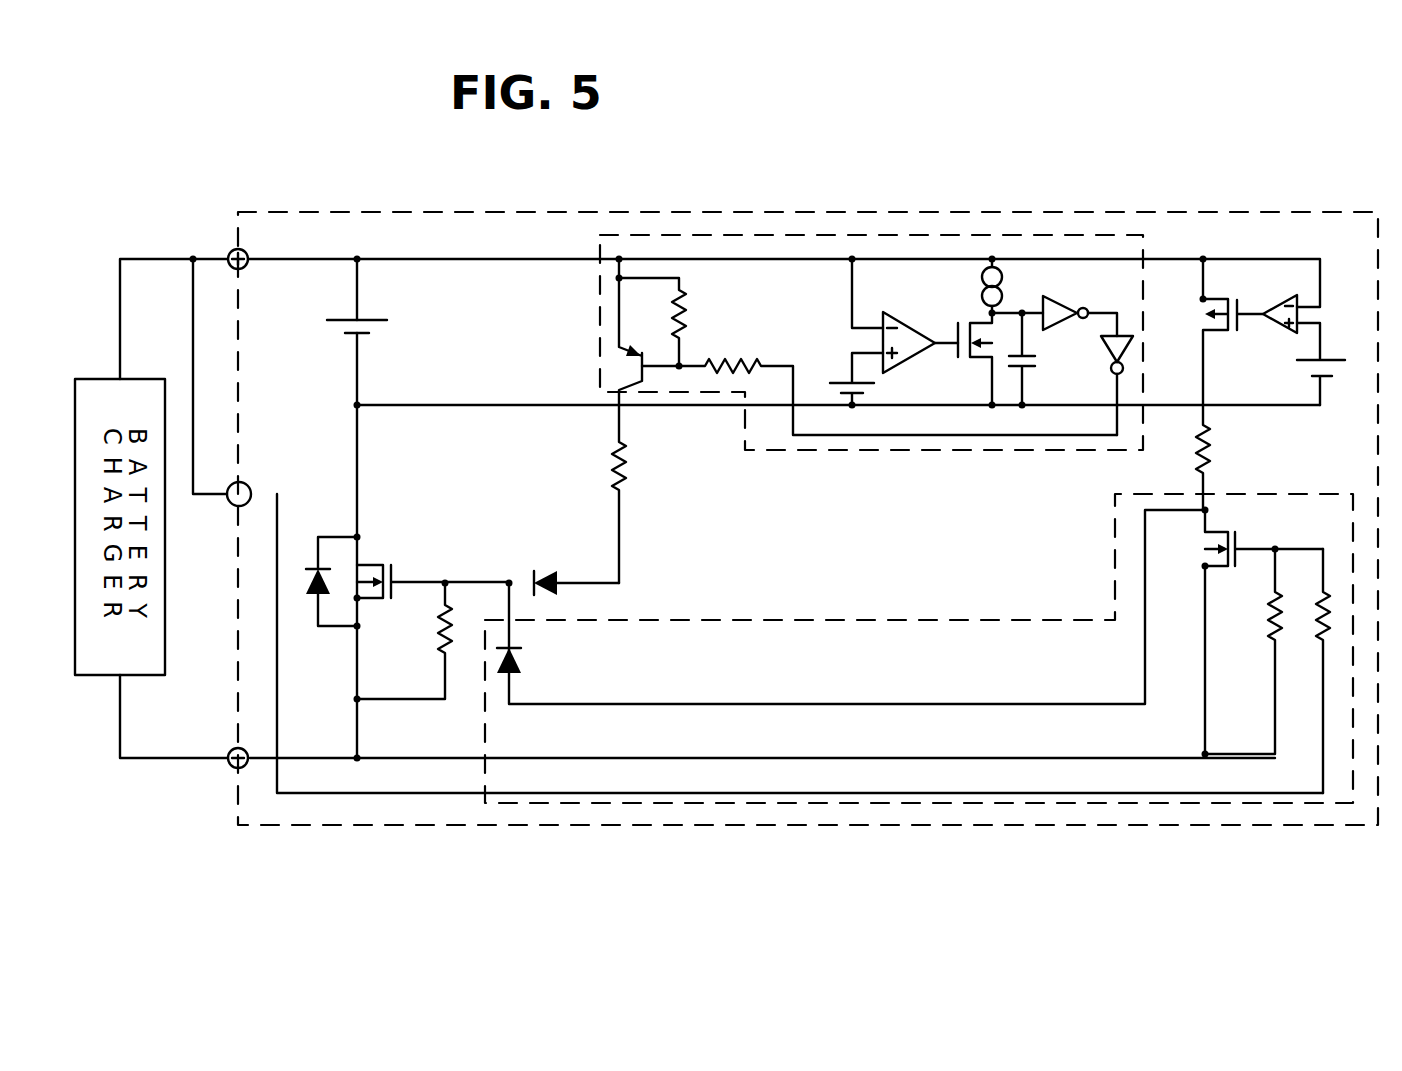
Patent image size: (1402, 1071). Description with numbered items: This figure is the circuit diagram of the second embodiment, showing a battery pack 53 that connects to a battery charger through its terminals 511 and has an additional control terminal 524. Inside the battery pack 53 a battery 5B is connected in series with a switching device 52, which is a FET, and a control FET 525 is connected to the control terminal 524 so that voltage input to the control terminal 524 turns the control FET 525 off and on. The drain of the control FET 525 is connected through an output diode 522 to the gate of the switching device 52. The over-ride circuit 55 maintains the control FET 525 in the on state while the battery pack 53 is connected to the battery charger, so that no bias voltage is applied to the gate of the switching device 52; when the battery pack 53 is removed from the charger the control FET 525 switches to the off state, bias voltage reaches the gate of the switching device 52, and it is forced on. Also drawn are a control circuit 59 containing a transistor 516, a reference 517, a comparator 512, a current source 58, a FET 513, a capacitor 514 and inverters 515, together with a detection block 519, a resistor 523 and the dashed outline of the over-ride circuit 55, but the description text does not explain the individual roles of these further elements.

The battery pack terminals 511 is at (232, 251).
The control terminal 524 is at (248, 484).
The secondary battery 5B is at (328, 329).
The switching device 52 is at (378, 561).
The output diode 522 is at (520, 662).
The transistor 516 is at (622, 373).
The reference voltage source 517 is at (835, 381).
The comparator 512 is at (912, 307).
The constant current source 58 is at (987, 270).
The MOSFET 513 is at (968, 358).
The capacitor 514 is at (1030, 370).
The inverters 515 is at (1112, 310).
The voltage detection circuit 519 is at (1258, 250).
The resistor 523 is at (1218, 430).
The control FET 525 is at (1222, 528).
The over-ride circuit 55 is at (800, 620).
The battery pack 53 is at (388, 828).
The control circuit 59 is at (812, 236).